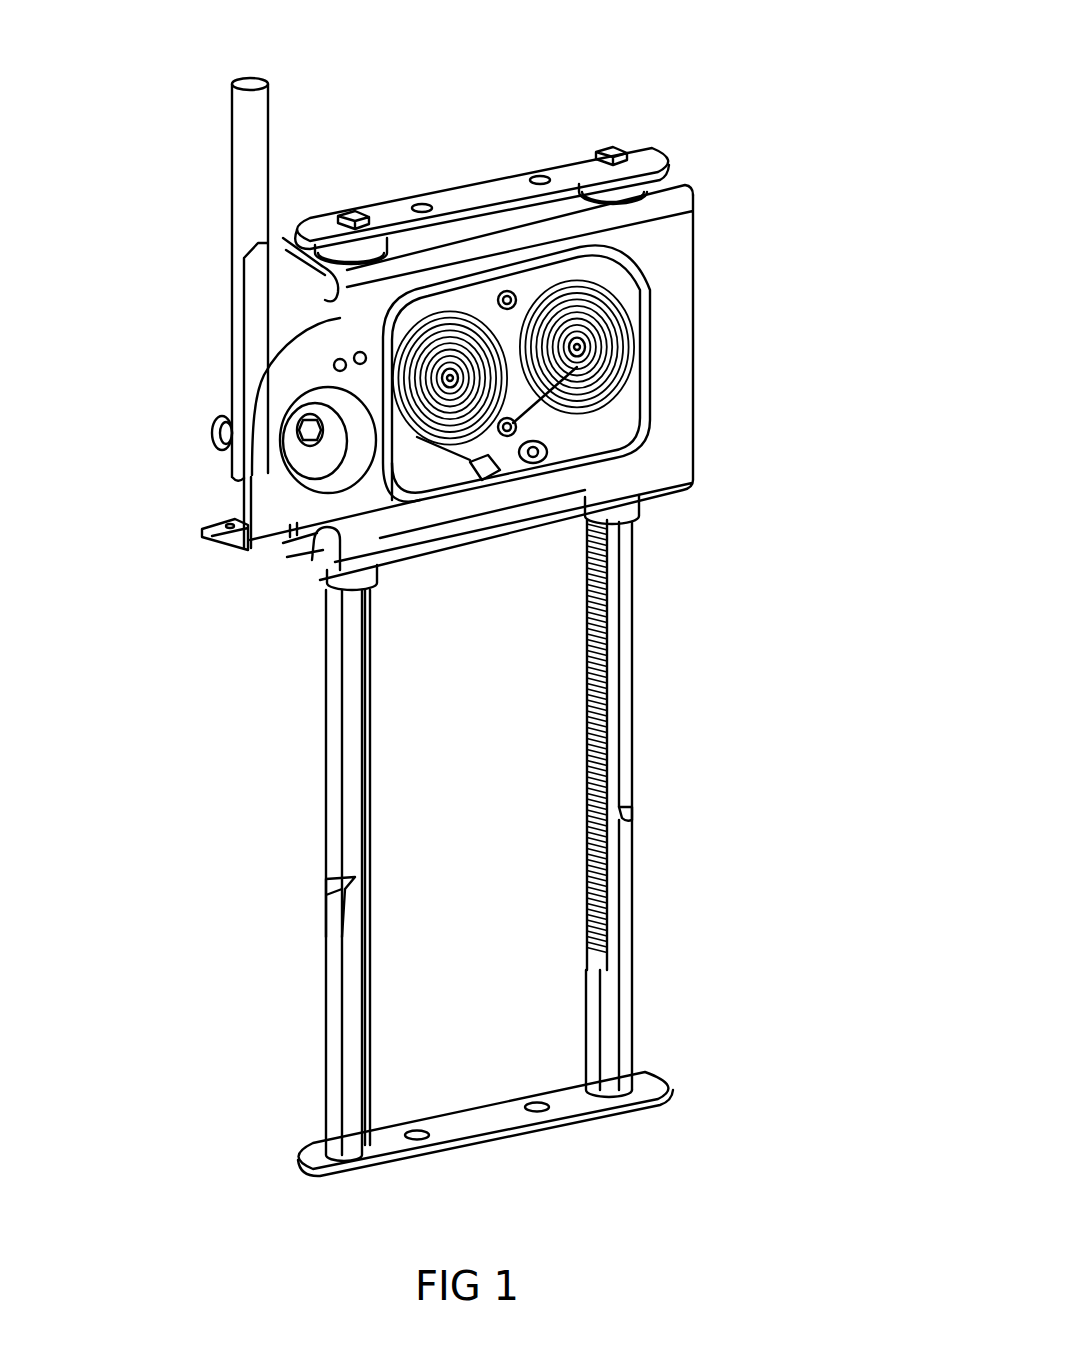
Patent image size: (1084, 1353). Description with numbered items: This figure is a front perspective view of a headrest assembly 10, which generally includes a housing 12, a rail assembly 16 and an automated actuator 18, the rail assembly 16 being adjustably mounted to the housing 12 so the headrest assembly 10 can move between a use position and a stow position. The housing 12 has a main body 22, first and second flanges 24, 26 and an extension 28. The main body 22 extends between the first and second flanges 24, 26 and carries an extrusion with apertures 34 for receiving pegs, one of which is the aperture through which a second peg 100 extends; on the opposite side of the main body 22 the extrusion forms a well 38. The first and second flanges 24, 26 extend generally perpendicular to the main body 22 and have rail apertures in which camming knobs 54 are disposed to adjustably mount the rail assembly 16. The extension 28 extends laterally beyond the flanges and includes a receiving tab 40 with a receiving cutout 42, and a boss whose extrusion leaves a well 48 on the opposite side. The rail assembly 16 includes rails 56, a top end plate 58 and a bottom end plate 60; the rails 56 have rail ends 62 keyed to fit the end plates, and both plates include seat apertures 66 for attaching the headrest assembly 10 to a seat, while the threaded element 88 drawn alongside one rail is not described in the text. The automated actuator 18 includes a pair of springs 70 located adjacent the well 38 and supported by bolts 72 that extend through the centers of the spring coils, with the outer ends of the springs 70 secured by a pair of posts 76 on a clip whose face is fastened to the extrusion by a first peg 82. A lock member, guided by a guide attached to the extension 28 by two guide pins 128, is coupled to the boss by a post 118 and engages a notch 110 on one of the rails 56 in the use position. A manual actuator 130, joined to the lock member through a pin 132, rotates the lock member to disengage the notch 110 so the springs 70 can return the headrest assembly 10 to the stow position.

The headrest assembly 10 is at (868, 98).
The housing 12 is at (722, 430).
The rail assembly 16 is at (148, 773).
The automated actuator 18 is at (552, 447).
The main body 22 is at (685, 395).
The first flange 24 is at (670, 187).
The second flange 26 is at (335, 528).
The extension 28 is at (265, 405).
The apertures for receiving pegs 34 is at (690, 230).
The well 38 is at (420, 465).
The receiving tab 40 is at (228, 541).
The receiving cutout 42 is at (230, 524).
The well 48 is at (327, 467).
The camming knobs 54 is at (290, 250).
The rails 56 is at (633, 1005).
The top end plate 58 is at (490, 187).
The bottom end plate 60 is at (465, 1130).
The rail ends 62 is at (350, 212).
The seat apertures 66 is at (420, 205).
The springs 70 is at (428, 348).
The bolts 72 is at (447, 378).
The posts 76 is at (518, 462).
The first peg 82 is at (510, 436).
The threaded rod 88 is at (372, 837).
The second peg 100 is at (516, 298).
The notch 110 is at (633, 815).
The post 118 is at (305, 445).
The guide pins 128 is at (340, 359).
The manual actuator 130 is at (255, 130).
The pin 132 is at (212, 427).